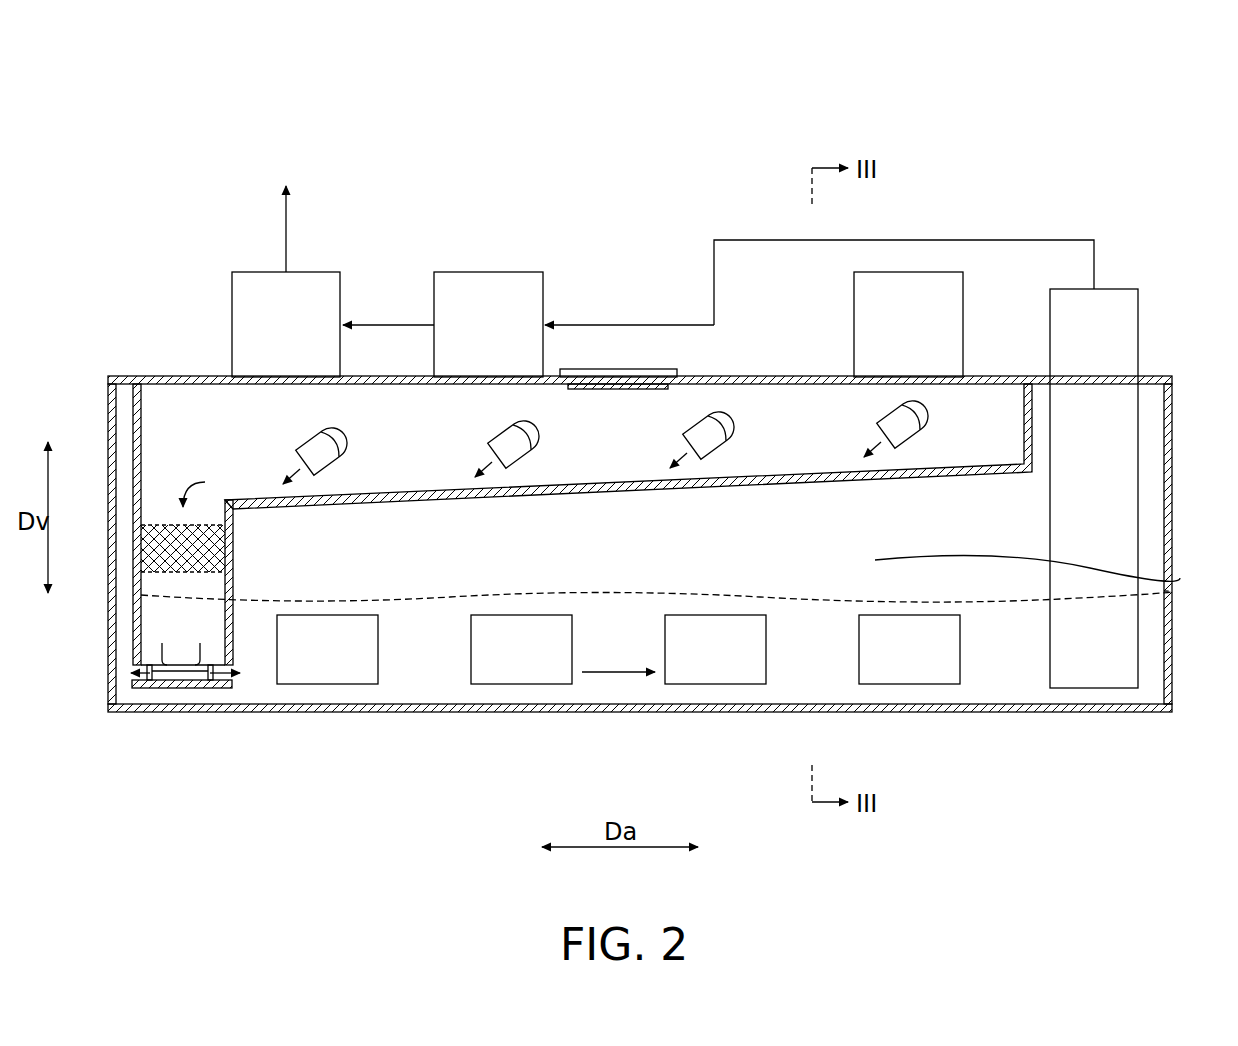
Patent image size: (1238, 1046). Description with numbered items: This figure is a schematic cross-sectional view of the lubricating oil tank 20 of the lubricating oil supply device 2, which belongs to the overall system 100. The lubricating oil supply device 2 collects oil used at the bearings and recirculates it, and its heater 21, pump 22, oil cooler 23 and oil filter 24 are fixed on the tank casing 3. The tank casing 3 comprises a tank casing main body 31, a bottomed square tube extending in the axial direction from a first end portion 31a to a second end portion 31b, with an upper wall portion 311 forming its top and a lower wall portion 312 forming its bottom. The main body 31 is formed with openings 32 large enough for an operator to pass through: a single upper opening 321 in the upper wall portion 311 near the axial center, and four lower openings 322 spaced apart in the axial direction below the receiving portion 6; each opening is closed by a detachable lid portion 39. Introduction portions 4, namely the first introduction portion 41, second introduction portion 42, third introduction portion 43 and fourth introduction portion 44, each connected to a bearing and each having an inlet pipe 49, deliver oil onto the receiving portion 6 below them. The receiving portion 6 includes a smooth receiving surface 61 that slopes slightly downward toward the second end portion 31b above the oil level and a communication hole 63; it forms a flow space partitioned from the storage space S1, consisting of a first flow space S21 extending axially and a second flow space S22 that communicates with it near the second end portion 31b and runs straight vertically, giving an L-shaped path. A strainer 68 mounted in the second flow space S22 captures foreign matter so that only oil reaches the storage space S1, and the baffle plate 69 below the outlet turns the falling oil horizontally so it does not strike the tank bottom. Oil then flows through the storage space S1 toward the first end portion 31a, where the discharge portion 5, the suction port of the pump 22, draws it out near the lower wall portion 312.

The compressor system 100 is at (1037, 104).
The lubricating oil supply device 2 is at (1129, 210).
The lubricating oil tank 20 is at (1163, 373).
The heater 21 is at (877, 306).
The pump 22 is at (1128, 320).
The oil cooler 23 is at (506, 283).
The oil filter 24 is at (248, 325).
The tank casing 3 is at (636, 552).
The tank casing main body 31 is at (636, 552).
The upper wall portion 311 is at (168, 378).
The lower wall portion 312 is at (1033, 713).
The first end portion 31a is at (1168, 516).
The second end portion 31b is at (115, 530).
The openings 32 is at (609, 561).
The upper opening 321 is at (662, 386).
The lower openings 322 is at (277, 652).
The lid portions 39 is at (620, 378).
The introduction portions 4 is at (612, 406).
The first introduction portion 41 is at (931, 407).
The second introduction portion 42 is at (685, 422).
The third introduction portion 43 is at (490, 425).
The fourth introduction portion 44 is at (300, 432).
The inlet pipe 49 is at (322, 458).
The discharge portion 5 is at (1093, 688).
The receiving portion 6 is at (960, 486).
The receiving surface 61 is at (638, 489).
The communication hole 63 is at (470, 494).
The strainer 68 is at (148, 527).
The baffle plate 69 is at (163, 689).
The storage space S1 is at (1044, 574).
The first flow space S21 is at (380, 452).
The second flow space S22 is at (165, 586).